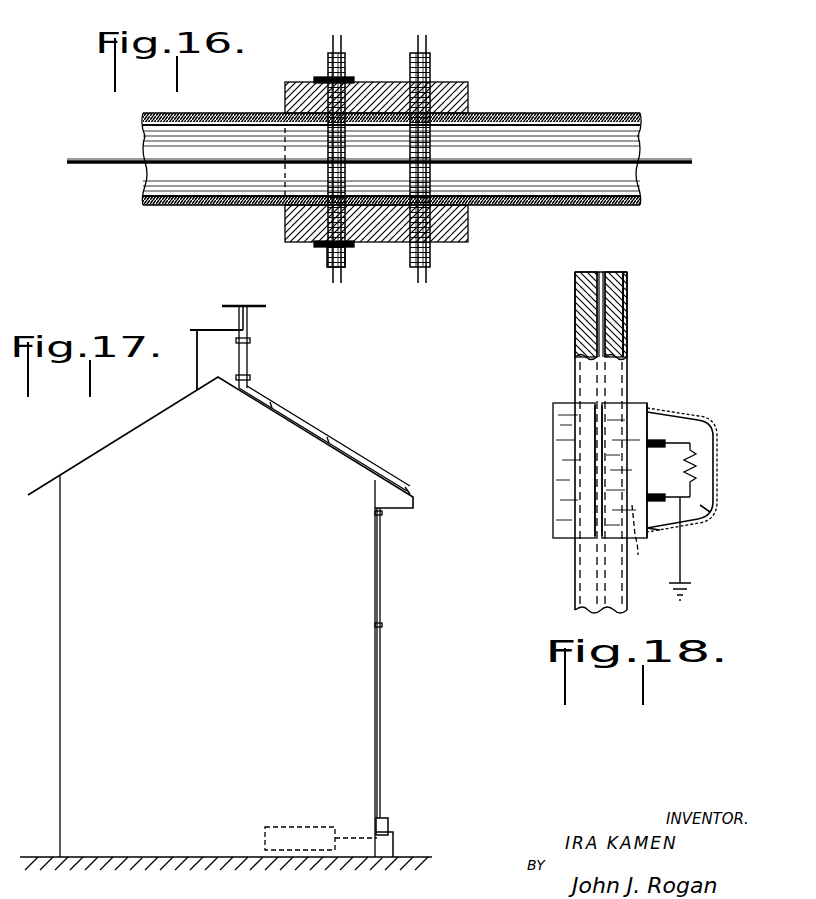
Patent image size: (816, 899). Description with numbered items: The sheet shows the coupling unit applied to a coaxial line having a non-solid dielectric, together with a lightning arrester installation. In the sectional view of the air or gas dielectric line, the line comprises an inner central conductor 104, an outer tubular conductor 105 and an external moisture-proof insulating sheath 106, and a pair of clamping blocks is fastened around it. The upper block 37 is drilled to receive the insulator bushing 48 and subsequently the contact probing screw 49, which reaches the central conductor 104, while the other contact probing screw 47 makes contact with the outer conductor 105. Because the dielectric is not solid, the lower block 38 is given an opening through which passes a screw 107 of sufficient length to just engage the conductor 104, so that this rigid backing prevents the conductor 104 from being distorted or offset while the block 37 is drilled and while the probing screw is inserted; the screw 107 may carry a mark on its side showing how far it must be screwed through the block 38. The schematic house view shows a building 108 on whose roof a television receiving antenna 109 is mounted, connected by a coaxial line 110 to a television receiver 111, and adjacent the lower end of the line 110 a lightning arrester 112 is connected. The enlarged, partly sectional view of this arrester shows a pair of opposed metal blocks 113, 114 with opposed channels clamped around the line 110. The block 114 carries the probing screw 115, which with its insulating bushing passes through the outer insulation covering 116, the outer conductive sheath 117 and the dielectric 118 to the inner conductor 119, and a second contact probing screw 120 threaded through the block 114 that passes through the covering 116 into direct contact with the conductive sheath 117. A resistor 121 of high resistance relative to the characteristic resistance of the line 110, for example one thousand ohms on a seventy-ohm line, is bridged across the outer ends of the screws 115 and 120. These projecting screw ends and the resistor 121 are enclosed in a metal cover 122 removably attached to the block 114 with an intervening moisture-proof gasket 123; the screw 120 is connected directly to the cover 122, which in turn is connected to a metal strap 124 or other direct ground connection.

In FIG. 16, the block 37 is at (468, 82).
In FIG. 16, the lower block 38 is at (440, 245).
In FIG. 16, the contact probing screw 47 is at (426, 67).
In FIG. 16, the insulator bushing 48 is at (342, 60).
In FIG. 16, the contact probing screw 49 is at (317, 78).
In FIG. 16, the inner central conductor 104 is at (675, 160).
In FIG. 16, the outer tubular conductor 105 is at (641, 130).
In FIG. 16, the external moisture-proof insulating sheath 106 is at (519, 113).
In FIG. 16, the screw 107 is at (328, 255).
In FIG. 17, the building 108 is at (87, 456).
In FIG. 17, the television receiving antenna 109 is at (241, 296).
In FIG. 17, the coaxial line 110 is at (310, 428).
In FIG. 18, the coaxial line 110 is at (572, 325).
In FIG. 17, the television receiver 111 is at (297, 826).
In FIG. 17, the lightning arrester 112 is at (390, 816).
In FIG. 18, the lightning arrester 112 is at (716, 414).
In FIG. 18, the metal block 113 is at (553, 427).
In FIG. 18, the metal block 114 is at (640, 405).
In FIG. 18, the probing screw 115 is at (660, 440).
In FIG. 18, the outer insulation covering 116 is at (627, 325).
In FIG. 18, the outer conductive sheath 117 is at (622, 272).
In FIG. 18, the dielectric 118 is at (605, 272).
In FIG. 18, the inner conductor 119 is at (593, 270).
In FIG. 18, the contact probing screw 120 is at (648, 541).
In FIG. 18, the resistor 121 is at (700, 470).
In FIG. 18, the metal cover 122 is at (715, 512).
In FIG. 18, the moisture-proof gasket 123 is at (650, 530).
In FIG. 18, the metal strap 124 is at (683, 575).